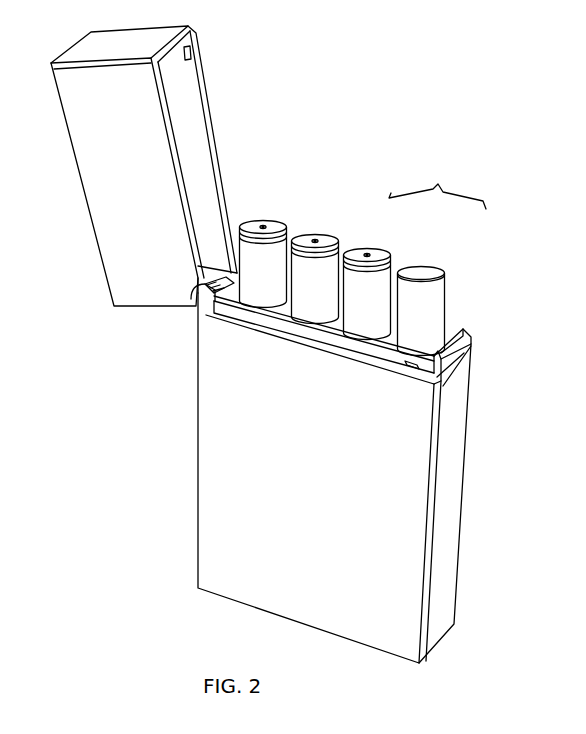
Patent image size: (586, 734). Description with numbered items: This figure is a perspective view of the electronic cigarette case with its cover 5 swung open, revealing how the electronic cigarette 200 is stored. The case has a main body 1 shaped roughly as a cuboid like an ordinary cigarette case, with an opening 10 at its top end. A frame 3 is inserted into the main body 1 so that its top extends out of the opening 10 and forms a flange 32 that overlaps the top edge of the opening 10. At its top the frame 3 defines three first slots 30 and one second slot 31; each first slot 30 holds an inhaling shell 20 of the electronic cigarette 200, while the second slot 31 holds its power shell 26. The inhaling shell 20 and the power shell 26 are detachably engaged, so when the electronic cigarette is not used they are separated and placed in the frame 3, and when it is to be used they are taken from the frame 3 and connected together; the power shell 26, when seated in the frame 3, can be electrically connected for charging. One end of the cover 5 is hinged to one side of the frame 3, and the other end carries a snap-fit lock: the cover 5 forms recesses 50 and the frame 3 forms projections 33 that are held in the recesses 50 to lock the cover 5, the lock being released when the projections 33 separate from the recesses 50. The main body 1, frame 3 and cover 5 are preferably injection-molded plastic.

The main body 1 is at (441, 598).
The frame 3 is at (466, 331).
The cover 5 is at (118, 217).
The opening 10 is at (258, 329).
The inhaling shell 20 is at (374, 248).
The power shell 26 is at (428, 264).
The first slot 30 is at (330, 325).
The second slot 31 is at (370, 352).
The flange 32 is at (198, 320).
The projection 33 is at (412, 366).
The recess 50 is at (191, 52).
The electronic cigarette 200 is at (437, 184).